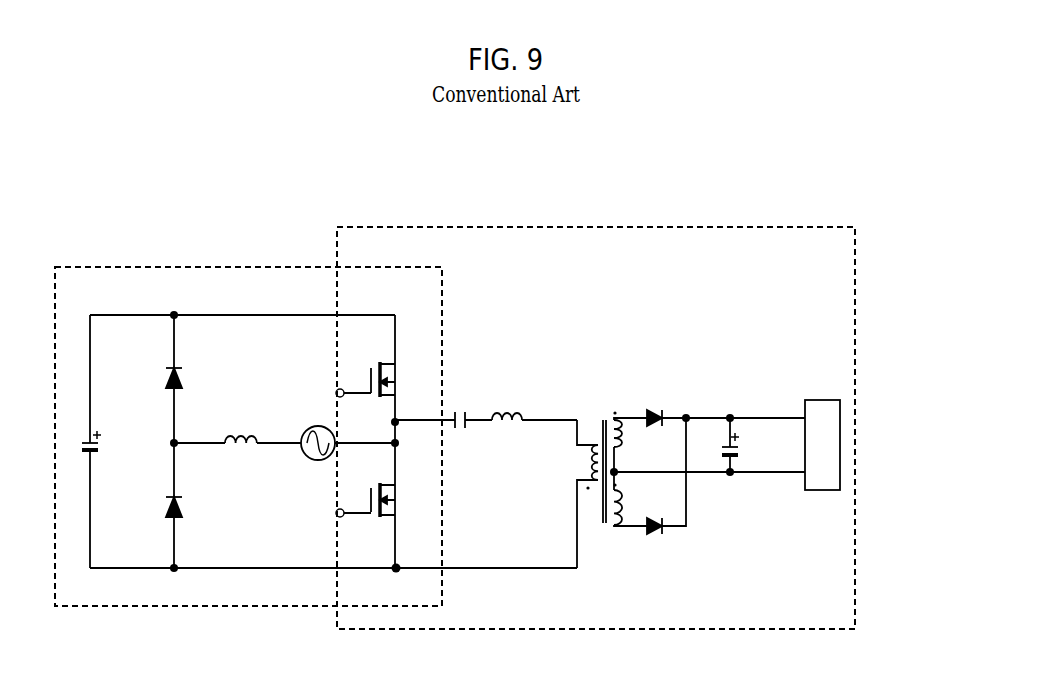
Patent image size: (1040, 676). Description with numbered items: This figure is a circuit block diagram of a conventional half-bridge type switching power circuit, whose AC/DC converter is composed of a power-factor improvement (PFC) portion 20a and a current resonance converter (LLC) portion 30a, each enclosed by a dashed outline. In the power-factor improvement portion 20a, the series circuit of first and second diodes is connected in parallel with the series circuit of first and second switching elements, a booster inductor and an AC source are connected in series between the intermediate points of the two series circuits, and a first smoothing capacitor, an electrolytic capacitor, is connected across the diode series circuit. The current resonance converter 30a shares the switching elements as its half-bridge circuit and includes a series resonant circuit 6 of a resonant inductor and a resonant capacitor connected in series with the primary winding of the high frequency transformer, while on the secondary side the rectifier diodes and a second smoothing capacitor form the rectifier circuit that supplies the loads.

The power-factor improvement (PFC) portion 20a is at (75, 267).
The current resonance converter (LLC) portion 30a is at (565, 227).
The series resonant circuit 6 is at (527, 380).